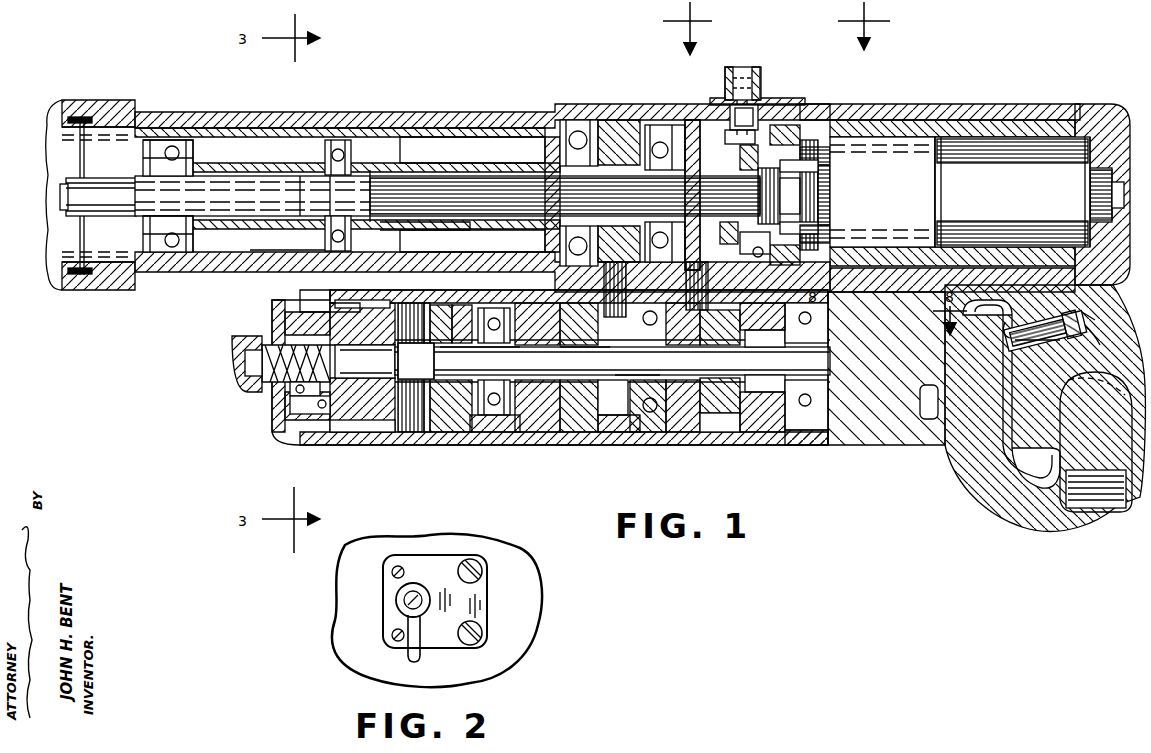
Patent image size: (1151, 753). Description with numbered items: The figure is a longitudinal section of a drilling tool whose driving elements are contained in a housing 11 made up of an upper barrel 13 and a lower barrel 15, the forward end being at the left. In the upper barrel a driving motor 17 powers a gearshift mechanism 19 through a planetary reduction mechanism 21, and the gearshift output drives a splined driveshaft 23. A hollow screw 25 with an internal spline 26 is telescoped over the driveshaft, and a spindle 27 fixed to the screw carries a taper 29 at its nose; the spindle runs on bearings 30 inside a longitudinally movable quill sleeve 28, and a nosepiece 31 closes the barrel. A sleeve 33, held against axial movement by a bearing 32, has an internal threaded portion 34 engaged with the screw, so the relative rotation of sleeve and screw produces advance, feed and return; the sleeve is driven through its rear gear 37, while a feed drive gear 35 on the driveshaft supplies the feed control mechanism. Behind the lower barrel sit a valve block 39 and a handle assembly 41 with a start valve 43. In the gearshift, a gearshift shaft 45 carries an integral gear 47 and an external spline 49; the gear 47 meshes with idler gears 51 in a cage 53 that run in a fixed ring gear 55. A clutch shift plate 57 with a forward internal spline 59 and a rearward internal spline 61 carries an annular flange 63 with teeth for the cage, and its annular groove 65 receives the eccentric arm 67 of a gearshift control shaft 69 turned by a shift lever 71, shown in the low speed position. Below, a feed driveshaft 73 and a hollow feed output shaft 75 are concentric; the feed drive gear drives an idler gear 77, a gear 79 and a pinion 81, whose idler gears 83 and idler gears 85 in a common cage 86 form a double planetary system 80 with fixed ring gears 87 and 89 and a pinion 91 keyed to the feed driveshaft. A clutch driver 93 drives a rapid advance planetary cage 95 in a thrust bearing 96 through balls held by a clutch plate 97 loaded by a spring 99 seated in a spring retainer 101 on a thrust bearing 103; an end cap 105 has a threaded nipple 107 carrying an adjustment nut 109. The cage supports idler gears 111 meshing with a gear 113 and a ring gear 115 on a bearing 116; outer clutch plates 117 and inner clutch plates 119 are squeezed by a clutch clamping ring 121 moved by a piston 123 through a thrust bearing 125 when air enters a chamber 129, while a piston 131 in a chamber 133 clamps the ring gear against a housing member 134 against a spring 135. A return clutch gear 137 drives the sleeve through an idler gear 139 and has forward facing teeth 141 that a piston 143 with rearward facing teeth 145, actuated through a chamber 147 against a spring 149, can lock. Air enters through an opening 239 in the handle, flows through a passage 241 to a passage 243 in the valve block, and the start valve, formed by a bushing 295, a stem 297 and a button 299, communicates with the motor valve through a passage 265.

In FIG. 1, the housing 11 is at (965, 104).
In FIG. 1, the upper barrel 13 is at (410, 112).
In FIG. 1, the lower barrel 15 is at (680, 432).
In FIG. 1, the driving motor 17 is at (1012, 192).
In FIG. 1, the gearshift mechanism 19 is at (806, 113).
In FIG. 1, the planetary reduction mechanism 21 is at (952, 206).
In FIG. 1, the splined driveshaft 23 is at (528, 200).
In FIG. 1, the hollow screw 25 is at (442, 160).
In FIG. 1, the internal spline 26 is at (556, 160).
In FIG. 1, the spindle 27 is at (257, 170).
In FIG. 1, the quill sleeve 28 is at (250, 256).
In FIG. 1, the taper 29 is at (118, 214).
In FIG. 1, the bearings 30 is at (303, 156).
In FIG. 1, the nosepiece 31 is at (52, 275).
In FIG. 1, the bearing 32 is at (576, 120).
In FIG. 1, the sleeve 33 is at (492, 160).
In FIG. 1, the internal threaded portion 34 is at (398, 232).
In FIG. 1, the feed drive gear 35 is at (697, 135).
In FIG. 1, the gear 37 is at (616, 135).
In FIG. 1, the valve block 39 is at (860, 446).
In FIG. 1, the handle assembly 41 is at (980, 505).
In FIG. 1, the start valve 43 is at (1010, 340).
In FIG. 1, the gearshift shaft 45 is at (832, 182).
In FIG. 1, the integral gear 47 is at (832, 195).
In FIG. 1, the external spline 49 is at (790, 196).
In FIG. 1, the idler gears 51 is at (830, 167).
In FIG. 1, the cage 53 is at (835, 222).
In FIG. 1, the ring gear 55 is at (822, 128).
In FIG. 1, the clutch shift plate 57 is at (735, 138).
In FIG. 1, the forward internal spline 59 is at (746, 158).
In FIG. 1, the rearward internal spline 61 is at (777, 196).
In FIG. 1, the annular flange 63 is at (770, 243).
In FIG. 1, the annular groove 65 is at (725, 233).
In FIG. 1, the eccentric arm 67 is at (744, 117).
In FIG. 1, the gearshift control shaft 69 is at (744, 68).
In FIG. 2, the gearshift control shaft 69 is at (417, 598).
In FIG. 1, the shift lever 71 is at (738, 98).
In FIG. 2, the shift lever 71 is at (419, 634).
In FIG. 1, the feed driveshaft 73 is at (828, 380).
In FIG. 1, the feed output shaft 75 is at (612, 361).
In FIG. 1, the idler gear 77 is at (708, 296).
In FIG. 1, the gear 79 is at (715, 432).
In FIG. 1, the double planetary system 80 is at (780, 432).
In FIG. 1, the pinion 81 is at (715, 345).
In FIG. 1, the idler gears 83 is at (765, 349).
In FIG. 1, the idler gears 85 is at (828, 352).
In FIG. 1, the common cage 86 is at (722, 392).
In FIG. 1, the fixed ring gear 87 is at (755, 432).
In FIG. 1, the fixed ring gear 89 is at (810, 442).
In FIG. 1, the pinion 91 is at (776, 372).
In FIG. 1, the clutch driver 93 is at (320, 438).
In FIG. 1, the rapid advance planetary cage 95 is at (346, 303).
In FIG. 1, the thrust bearing 96 is at (350, 432).
In FIG. 1, the clutch plate 97 is at (302, 414).
In FIG. 1, the spring 99 is at (235, 381).
In FIG. 1, the spring retainer 101 is at (365, 361).
In FIG. 1, the thrust bearing 103 is at (295, 396).
In FIG. 1, the end cap 105 is at (285, 306).
In FIG. 1, the threaded nipple 107 is at (274, 336).
In FIG. 1, the adjustment nut 109 is at (242, 356).
In FIG. 1, the idler gears 111 is at (410, 303).
In FIG. 1, the gear 113 is at (421, 361).
In FIG. 1, the ring gear 115 is at (455, 303).
In FIG. 1, the bearing 116 is at (370, 432).
In FIG. 1, the outer clutch plates 117 is at (421, 432).
In FIG. 1, the inner clutch plates 119 is at (414, 458).
In FIG. 1, the clutch clamping ring 121 is at (462, 432).
In FIG. 1, the piston 123 is at (535, 432).
In FIG. 1, the thrust bearing 125 is at (480, 358).
In FIG. 1, the chamber 129 is at (575, 432).
In FIG. 1, the piston 131 is at (492, 308).
In FIG. 1, the chamber 133 is at (518, 308).
In FIG. 1, the housing member 134 is at (322, 292).
In FIG. 1, the spring 135 is at (492, 432).
In FIG. 1, the return clutch gear 137 is at (637, 364).
In FIG. 1, the idler gear 139 is at (628, 290).
In FIG. 1, the forward facing teeth 141 is at (645, 432).
In FIG. 1, the piston 143 is at (570, 303).
In FIG. 1, the rearward facing teeth 145 is at (615, 432).
In FIG. 1, the chamber 147 is at (545, 303).
In FIG. 1, the spring 149 is at (585, 358).
In FIG. 1, the opening 239 is at (1108, 470).
In FIG. 1, the passage 241 is at (975, 466).
In FIG. 1, the passage 243 is at (928, 420).
In FIG. 1, the passage 265 is at (1098, 316).
In FIG. 1, the bushing 295 is at (1100, 335).
In FIG. 1, the stem 297 is at (1020, 345).
In FIG. 1, the button 299 is at (1003, 326).